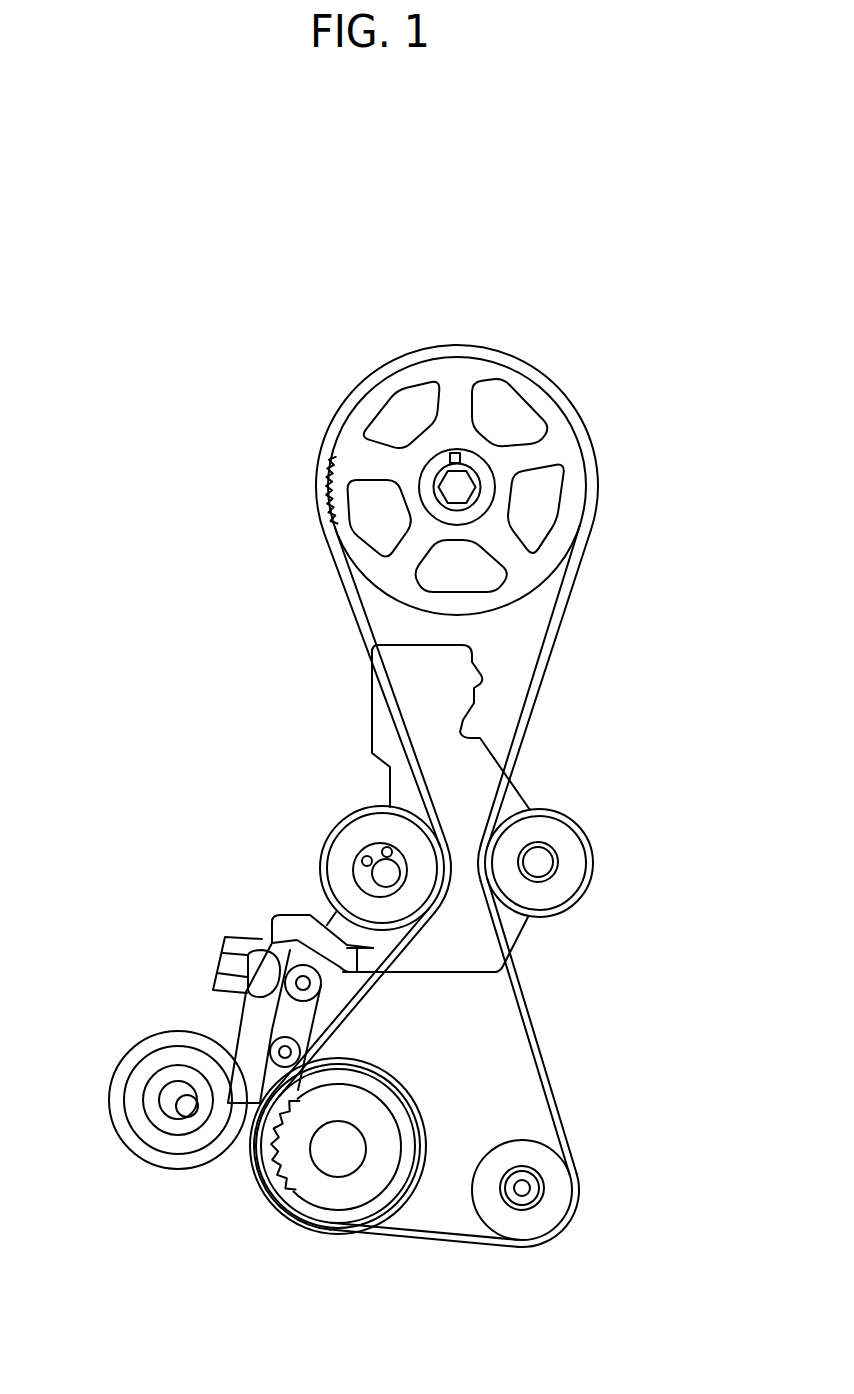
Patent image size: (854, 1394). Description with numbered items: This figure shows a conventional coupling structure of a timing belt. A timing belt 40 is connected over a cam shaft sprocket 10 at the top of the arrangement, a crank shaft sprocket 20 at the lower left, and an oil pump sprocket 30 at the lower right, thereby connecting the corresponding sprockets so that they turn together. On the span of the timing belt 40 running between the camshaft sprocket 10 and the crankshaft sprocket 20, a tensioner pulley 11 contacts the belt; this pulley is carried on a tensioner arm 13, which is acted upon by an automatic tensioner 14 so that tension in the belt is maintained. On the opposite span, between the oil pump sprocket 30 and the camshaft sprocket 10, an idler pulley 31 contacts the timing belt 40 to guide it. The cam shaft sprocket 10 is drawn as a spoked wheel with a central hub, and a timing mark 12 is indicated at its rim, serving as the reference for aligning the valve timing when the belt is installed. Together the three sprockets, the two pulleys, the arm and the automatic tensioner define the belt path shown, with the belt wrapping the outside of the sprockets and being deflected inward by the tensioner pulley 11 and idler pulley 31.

The cam shaft sprocket 10 is at (372, 400).
The tensioner pulley 11 is at (343, 857).
The timing mark 12 is at (327, 488).
The tensioner arm 13 is at (282, 925).
The automatic tensioner 14 is at (260, 983).
The crank shaft sprocket 20 is at (317, 1185).
The oil pump sprocket 30 is at (555, 1208).
The idler pulley 31 is at (567, 852).
The timing belt 40 is at (365, 630).